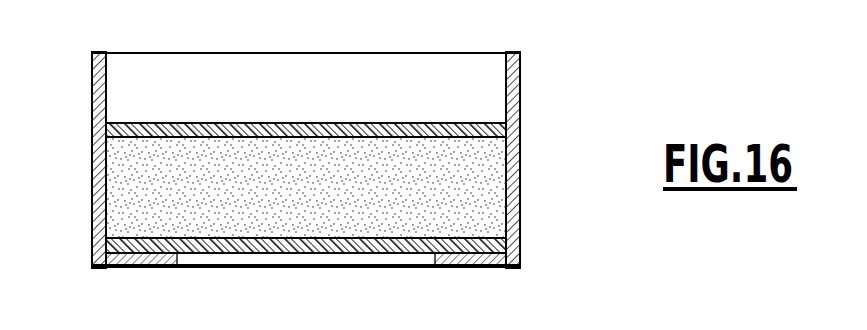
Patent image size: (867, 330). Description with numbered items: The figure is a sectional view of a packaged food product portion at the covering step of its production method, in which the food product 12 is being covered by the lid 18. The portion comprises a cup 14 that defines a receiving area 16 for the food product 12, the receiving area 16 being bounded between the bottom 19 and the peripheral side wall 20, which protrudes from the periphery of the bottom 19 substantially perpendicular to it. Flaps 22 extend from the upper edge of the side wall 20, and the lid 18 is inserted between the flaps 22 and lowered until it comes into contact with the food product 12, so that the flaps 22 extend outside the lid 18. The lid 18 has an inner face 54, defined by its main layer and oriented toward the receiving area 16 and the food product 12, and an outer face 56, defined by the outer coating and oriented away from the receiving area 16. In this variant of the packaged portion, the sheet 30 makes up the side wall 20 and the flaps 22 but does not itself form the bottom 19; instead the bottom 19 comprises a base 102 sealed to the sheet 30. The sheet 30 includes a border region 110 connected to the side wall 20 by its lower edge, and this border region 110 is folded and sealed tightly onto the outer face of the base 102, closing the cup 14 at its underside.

The food product 12 is at (306, 187).
The cup 14 is at (540, 203).
The receiving area 16 is at (111, 211).
The lid 18 is at (270, 124).
The bottom 19 is at (385, 251).
The peripheral side wall 20 is at (97, 185).
The flaps 22 is at (97, 76).
The sheet 30 is at (521, 155).
The inner face 54 is at (396, 138).
The outer face 56 is at (392, 124).
The base 102 is at (250, 250).
The border region 110 is at (152, 259).